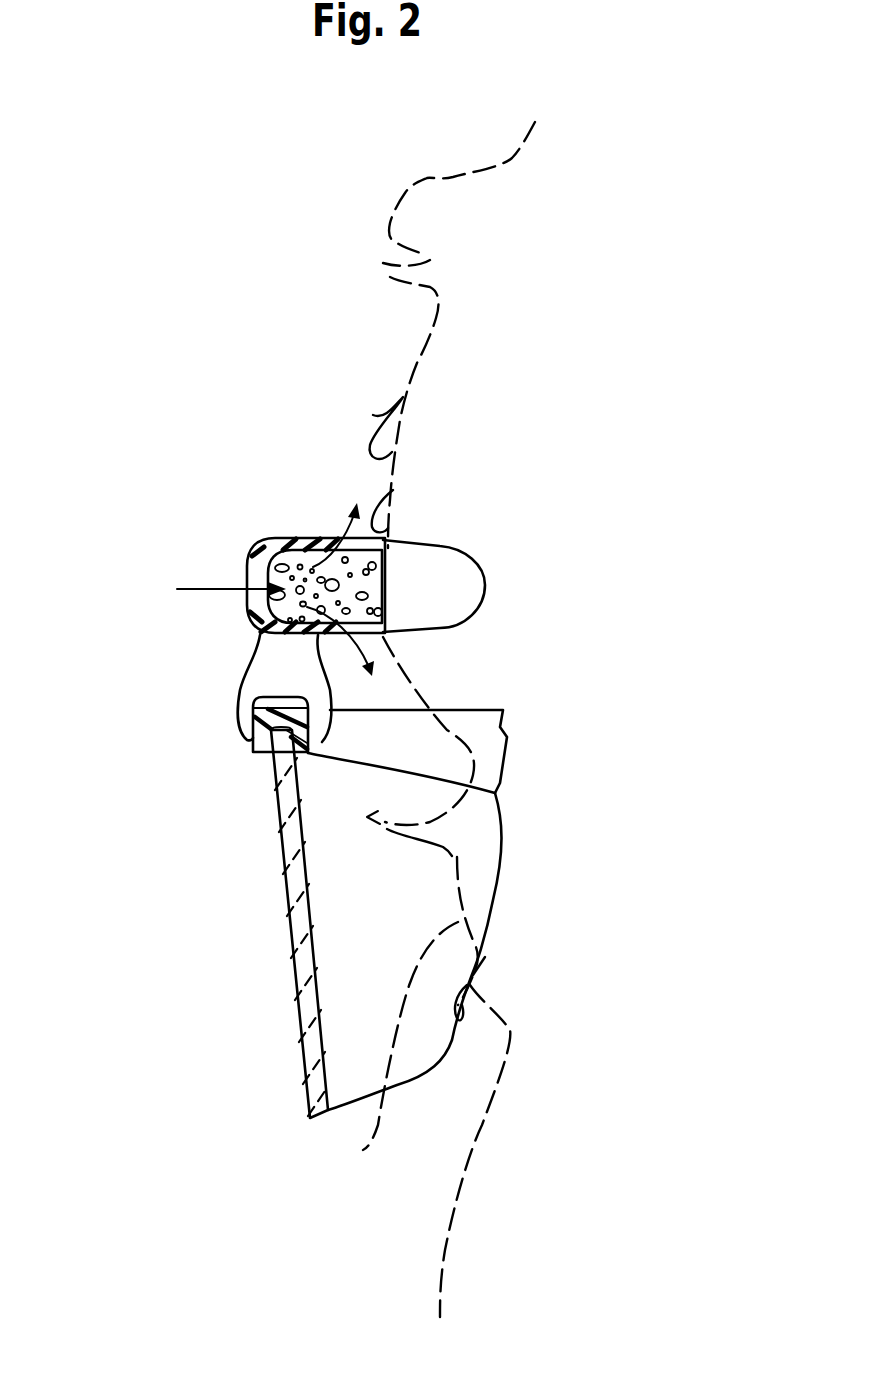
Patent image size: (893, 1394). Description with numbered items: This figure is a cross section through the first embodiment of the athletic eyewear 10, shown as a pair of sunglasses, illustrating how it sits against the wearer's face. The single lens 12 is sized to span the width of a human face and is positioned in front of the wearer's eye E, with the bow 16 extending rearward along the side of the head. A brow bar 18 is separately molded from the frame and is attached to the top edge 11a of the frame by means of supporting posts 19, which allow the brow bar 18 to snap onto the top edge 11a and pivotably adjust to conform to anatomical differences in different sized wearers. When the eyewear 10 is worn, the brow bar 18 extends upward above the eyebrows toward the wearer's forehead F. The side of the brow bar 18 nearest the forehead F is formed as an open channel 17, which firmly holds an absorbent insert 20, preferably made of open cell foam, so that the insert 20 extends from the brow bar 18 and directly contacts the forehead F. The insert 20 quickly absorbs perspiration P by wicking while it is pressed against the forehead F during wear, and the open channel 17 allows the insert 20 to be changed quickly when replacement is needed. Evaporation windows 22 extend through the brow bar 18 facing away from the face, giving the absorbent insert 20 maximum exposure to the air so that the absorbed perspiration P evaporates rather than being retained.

The eyewear 10 is at (178, 846).
The top edge 11a is at (255, 752).
The lens 12 is at (290, 922).
The bow 16 is at (493, 748).
The open channel 17 is at (465, 592).
The brow bar 18 is at (261, 569).
The supporting post 19 is at (258, 683).
The absorbent insert 20 is at (312, 563).
The evaporation window 22 is at (252, 600).
The forehead F is at (410, 378).
The perspiration P is at (373, 415).
The eye E is at (363, 1150).